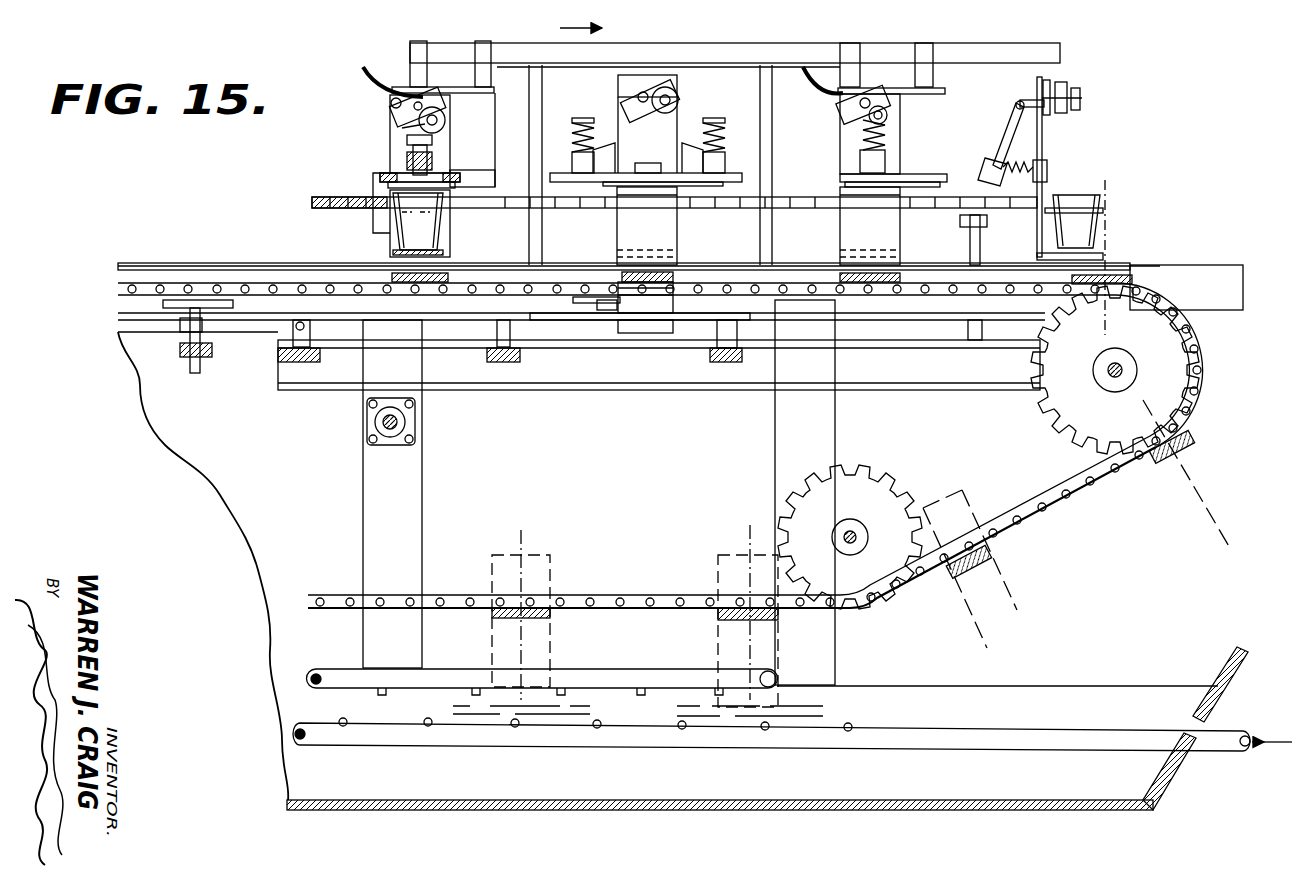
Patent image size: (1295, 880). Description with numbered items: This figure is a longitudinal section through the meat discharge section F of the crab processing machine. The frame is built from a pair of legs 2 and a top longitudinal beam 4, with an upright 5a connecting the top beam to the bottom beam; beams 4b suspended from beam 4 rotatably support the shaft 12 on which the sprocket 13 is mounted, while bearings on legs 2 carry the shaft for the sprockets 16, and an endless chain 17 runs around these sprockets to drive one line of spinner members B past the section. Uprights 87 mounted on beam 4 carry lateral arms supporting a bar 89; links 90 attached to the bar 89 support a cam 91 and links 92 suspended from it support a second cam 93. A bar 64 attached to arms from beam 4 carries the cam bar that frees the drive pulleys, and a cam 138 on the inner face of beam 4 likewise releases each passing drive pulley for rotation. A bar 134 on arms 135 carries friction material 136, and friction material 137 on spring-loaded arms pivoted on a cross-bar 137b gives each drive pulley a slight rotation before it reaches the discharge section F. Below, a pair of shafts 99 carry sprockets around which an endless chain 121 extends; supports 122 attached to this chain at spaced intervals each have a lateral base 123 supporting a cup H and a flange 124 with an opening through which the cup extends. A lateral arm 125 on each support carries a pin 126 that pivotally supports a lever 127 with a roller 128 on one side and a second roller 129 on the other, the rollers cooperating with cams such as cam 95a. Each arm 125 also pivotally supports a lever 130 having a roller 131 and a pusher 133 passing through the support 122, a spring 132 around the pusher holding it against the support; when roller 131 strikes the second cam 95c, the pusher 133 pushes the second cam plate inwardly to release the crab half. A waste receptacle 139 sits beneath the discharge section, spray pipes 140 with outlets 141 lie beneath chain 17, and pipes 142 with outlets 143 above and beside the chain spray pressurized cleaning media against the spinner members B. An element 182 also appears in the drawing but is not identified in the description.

The legs 2 is at (820, 650).
The longitudinal beam 4 is at (1205, 275).
The beams 4b is at (925, 372).
The upright 5a is at (372, 530).
The shaft 12 is at (1125, 368).
The sprocket 13 is at (1165, 385).
The sprockets 16 is at (860, 500).
The endless chain 17 is at (610, 595).
The bar 64 is at (132, 330).
The uprights 87 is at (530, 105).
The bar 89 is at (698, 60).
The links 90 is at (418, 55).
The cam 91 is at (378, 72).
The links 92 is at (906, 55).
The second cam 93 is at (832, 68).
The cam 95a is at (380, 180).
The second cam 95c is at (823, 190).
The shaft 99 is at (980, 246).
The endless chain 121 is at (312, 204).
The support 122 is at (443, 150).
The lateral base 123 is at (440, 252).
The flange 124 is at (440, 210).
The lateral arm 125 is at (1032, 102).
The pin 126 is at (392, 104).
The lever 127 is at (447, 120).
The roller 128 is at (368, 78).
The second roller 129 is at (405, 127).
The lever 130 is at (1012, 128).
The roller 131 is at (988, 170).
The spring 132 is at (1012, 162).
The pusher 133 is at (1047, 170).
The bar 134 is at (742, 318).
The arms 135 is at (735, 333).
The friction material 136 is at (608, 318).
The friction material 137 is at (165, 304).
The cross-bar 137b is at (178, 350).
The cam 138 is at (555, 350).
The waste receptacle 139 is at (1165, 804).
The spray pipes 140 is at (985, 725).
The outlets 141 is at (680, 732).
The pipes 142 is at (598, 672).
The outlets 143 is at (388, 702).
The spacer block 182 is at (497, 328).
The spinner members B is at (395, 162).
The discharge section F is at (946, 57).
The cup H is at (398, 232).